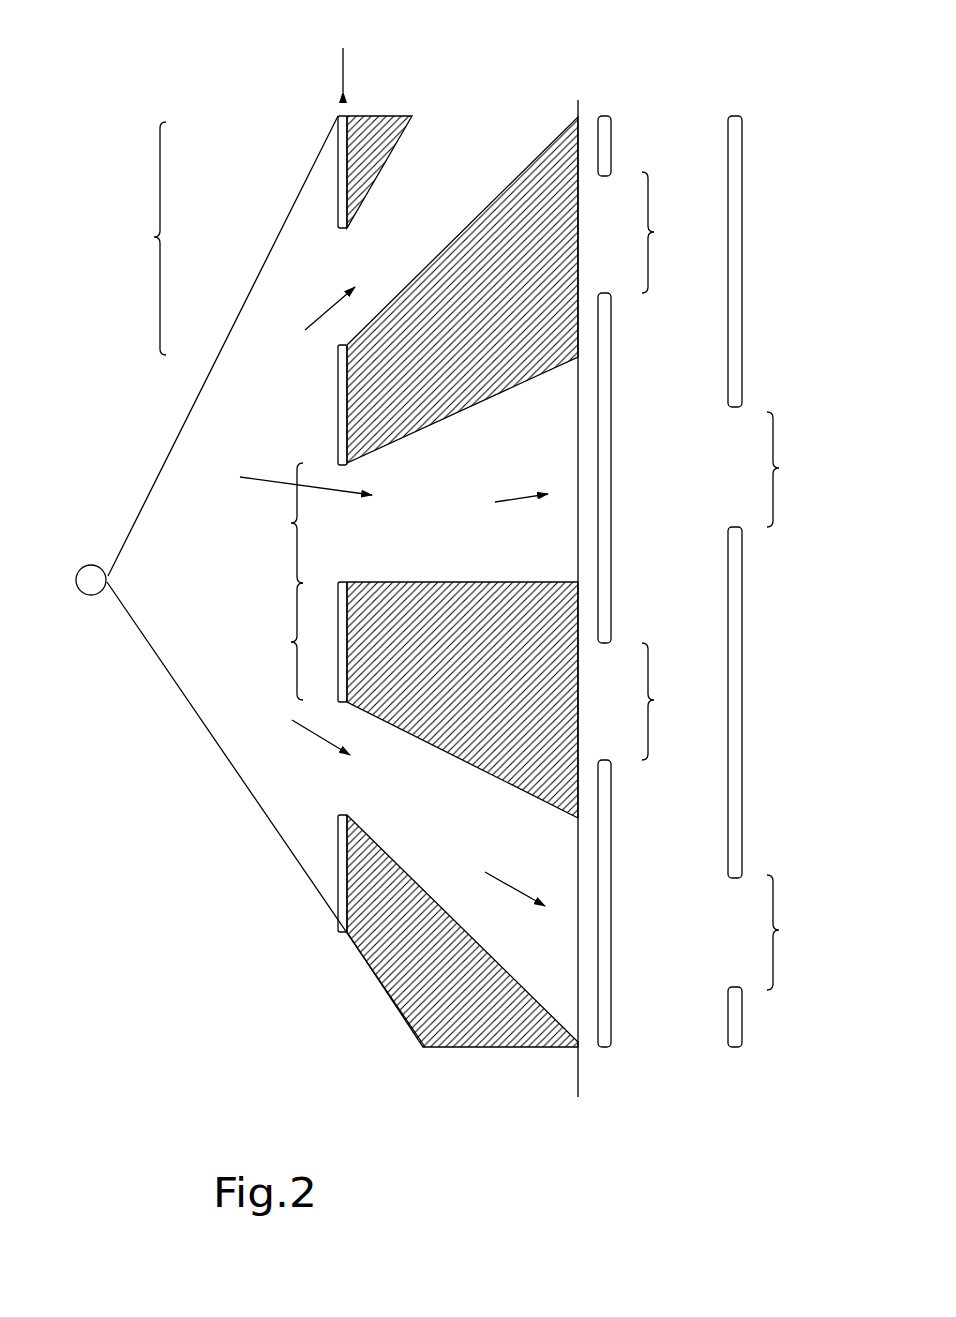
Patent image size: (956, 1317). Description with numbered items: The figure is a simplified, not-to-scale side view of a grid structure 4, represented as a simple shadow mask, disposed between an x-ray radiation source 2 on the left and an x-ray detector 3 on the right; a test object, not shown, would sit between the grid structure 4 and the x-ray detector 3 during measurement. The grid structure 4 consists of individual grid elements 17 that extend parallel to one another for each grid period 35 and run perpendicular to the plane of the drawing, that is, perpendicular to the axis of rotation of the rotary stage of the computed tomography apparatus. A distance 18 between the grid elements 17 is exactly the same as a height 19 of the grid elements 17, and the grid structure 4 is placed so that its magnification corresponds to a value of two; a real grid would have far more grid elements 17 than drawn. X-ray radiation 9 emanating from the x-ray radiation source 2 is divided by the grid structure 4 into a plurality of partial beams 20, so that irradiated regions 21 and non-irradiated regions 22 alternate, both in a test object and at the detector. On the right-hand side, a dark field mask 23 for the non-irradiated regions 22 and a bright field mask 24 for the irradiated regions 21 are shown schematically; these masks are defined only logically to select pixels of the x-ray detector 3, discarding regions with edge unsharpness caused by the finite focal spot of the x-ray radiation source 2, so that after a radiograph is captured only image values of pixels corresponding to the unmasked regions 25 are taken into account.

The x-ray radiation source 2 is at (88, 583).
The x-ray detector 3 is at (578, 103).
The grid structure 4 is at (343, 49).
The x-ray radiation 9 is at (157, 478).
The grid elements 17 is at (337, 217).
The distance between the grid elements 18 is at (278, 523).
The height of the grid elements 19 is at (278, 641).
The partial beams 20 is at (288, 521).
The irradiated regions 21 is at (497, 695).
The non-irradiated regions 22 is at (548, 202).
The dark field mask 23 is at (601, 1065).
The bright field mask 24 is at (736, 1065).
The unmasked regions 25 is at (729, 581).
The grid period 35 is at (138, 238).